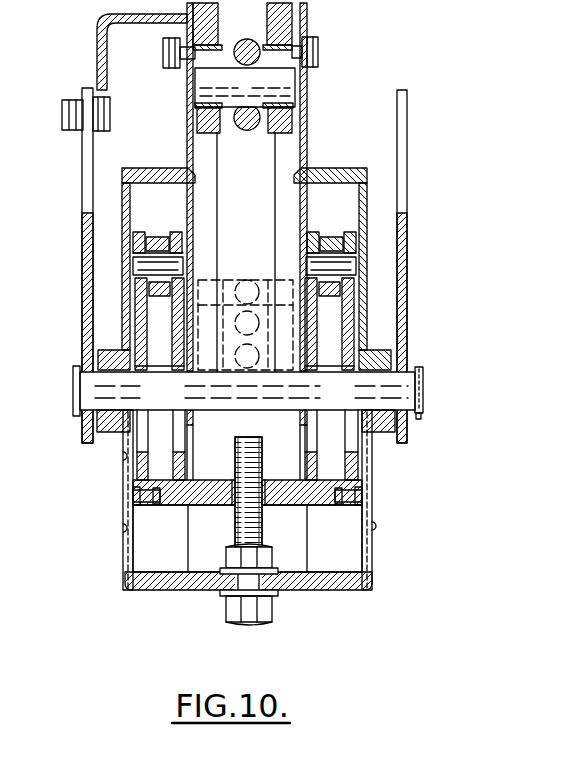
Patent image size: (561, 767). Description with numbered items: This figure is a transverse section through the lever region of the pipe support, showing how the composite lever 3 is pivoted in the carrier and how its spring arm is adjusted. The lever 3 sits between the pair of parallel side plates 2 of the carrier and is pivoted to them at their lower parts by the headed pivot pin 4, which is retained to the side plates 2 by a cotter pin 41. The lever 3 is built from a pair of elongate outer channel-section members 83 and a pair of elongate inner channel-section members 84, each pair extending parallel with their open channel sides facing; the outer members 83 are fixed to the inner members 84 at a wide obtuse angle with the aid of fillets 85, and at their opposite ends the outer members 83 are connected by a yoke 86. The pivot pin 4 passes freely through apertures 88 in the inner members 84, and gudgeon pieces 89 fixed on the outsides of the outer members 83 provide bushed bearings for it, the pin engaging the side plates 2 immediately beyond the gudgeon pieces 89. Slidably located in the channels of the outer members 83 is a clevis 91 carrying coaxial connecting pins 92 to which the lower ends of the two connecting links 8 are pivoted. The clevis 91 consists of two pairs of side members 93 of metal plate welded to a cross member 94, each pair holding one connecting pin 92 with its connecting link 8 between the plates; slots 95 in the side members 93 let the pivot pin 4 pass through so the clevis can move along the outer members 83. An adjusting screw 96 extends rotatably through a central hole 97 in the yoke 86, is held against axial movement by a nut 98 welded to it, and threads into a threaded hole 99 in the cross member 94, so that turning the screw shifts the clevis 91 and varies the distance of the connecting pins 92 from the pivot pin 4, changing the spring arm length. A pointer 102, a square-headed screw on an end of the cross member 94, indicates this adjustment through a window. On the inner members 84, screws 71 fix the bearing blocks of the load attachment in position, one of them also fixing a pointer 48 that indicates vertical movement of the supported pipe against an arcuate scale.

The side plates 2 is at (82, 254).
The lever 3 is at (314, 122).
The pivot pin 4 is at (100, 382).
The connecting links 8 is at (177, 372).
The cotter pin 41 is at (420, 416).
The pointer 48 is at (100, 58).
The screws 71 is at (170, 50).
The outer channel-section members 83 is at (150, 556).
The inner channel-section members 84 is at (286, 210).
The fillets 85 is at (156, 168).
The yoke 86 is at (175, 586).
The apertures 88 is at (298, 413).
The gudgeon pieces 89 is at (122, 432).
The clevis 91 is at (126, 485).
The connecting pins 92 is at (312, 262).
The side members 93 is at (172, 482).
The cross member 94 is at (226, 498).
The slots 95 is at (178, 358).
The adjusting screw 96 is at (260, 508).
The central hole 97 is at (282, 590).
The nut 98 is at (238, 562).
The threaded hole 99 is at (262, 481).
The pointer 102 is at (123, 498).